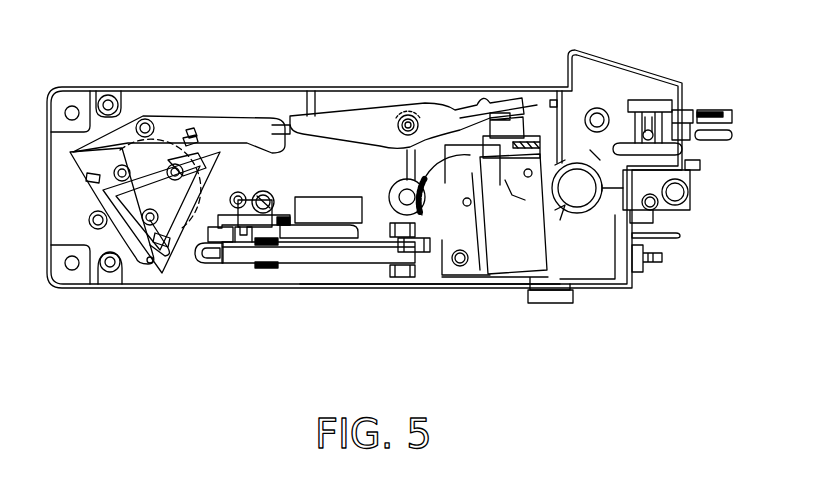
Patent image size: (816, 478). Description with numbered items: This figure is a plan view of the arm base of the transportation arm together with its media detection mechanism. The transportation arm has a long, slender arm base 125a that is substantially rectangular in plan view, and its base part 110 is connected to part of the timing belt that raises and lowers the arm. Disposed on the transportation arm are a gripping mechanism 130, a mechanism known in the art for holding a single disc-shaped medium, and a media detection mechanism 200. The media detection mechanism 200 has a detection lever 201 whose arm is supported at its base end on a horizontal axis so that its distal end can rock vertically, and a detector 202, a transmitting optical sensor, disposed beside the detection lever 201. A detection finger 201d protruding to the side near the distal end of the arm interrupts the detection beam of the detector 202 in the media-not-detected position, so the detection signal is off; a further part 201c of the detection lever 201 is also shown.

The base part 110 is at (685, 100).
The arm base 125a is at (388, 290).
The gripping mechanism 130 is at (345, 110).
The media detection mechanism 200 is at (338, 270).
The detection lever 201 is at (306, 255).
The clip bracket 201c is at (420, 255).
The detection finger 201d is at (258, 228).
The detector 202 is at (268, 270).